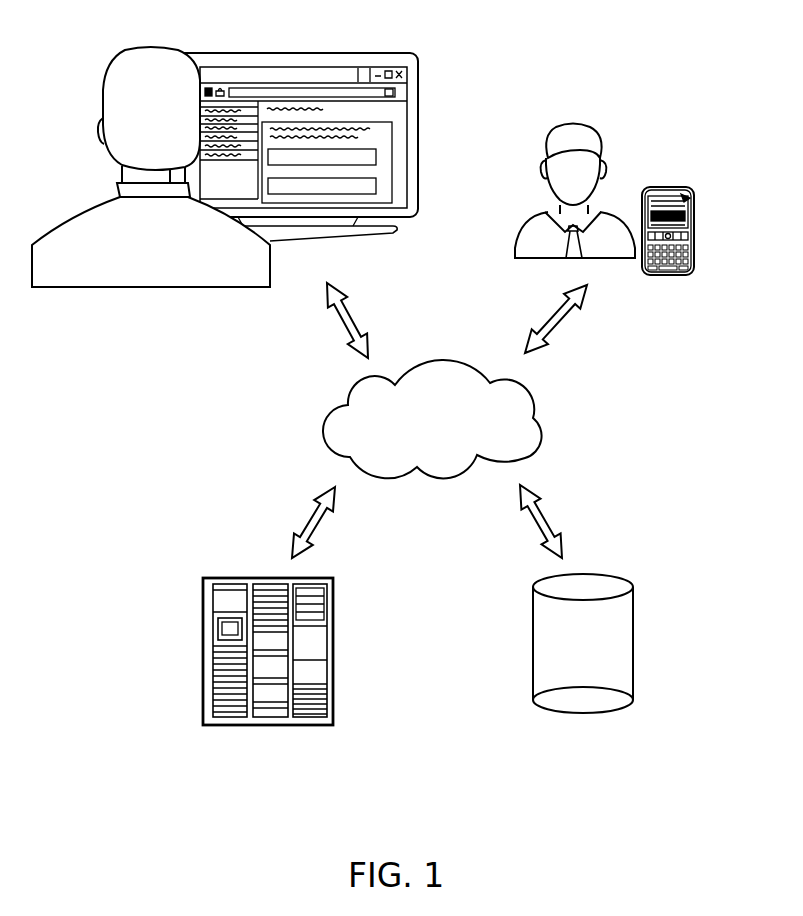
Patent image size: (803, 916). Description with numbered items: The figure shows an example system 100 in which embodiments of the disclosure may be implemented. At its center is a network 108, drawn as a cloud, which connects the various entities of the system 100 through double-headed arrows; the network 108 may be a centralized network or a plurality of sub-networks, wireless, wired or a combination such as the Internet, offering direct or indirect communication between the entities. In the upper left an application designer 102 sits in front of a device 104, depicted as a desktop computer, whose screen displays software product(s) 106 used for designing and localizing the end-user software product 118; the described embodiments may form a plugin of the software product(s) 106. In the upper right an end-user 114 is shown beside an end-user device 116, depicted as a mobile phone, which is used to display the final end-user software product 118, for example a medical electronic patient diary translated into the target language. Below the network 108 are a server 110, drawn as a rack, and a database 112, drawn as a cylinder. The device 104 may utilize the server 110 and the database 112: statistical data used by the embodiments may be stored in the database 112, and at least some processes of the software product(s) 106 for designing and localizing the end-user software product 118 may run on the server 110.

The system 100 is at (713, 785).
The application designer 102 is at (93, 84).
The device 104 is at (418, 146).
The software product(s) 106 is at (283, 72).
The network 108 is at (446, 435).
The server 110 is at (334, 634).
The database 112 is at (634, 626).
The end-user 114 is at (574, 122).
The end-user device 116 is at (694, 230).
The end-user software product 118 is at (688, 192).